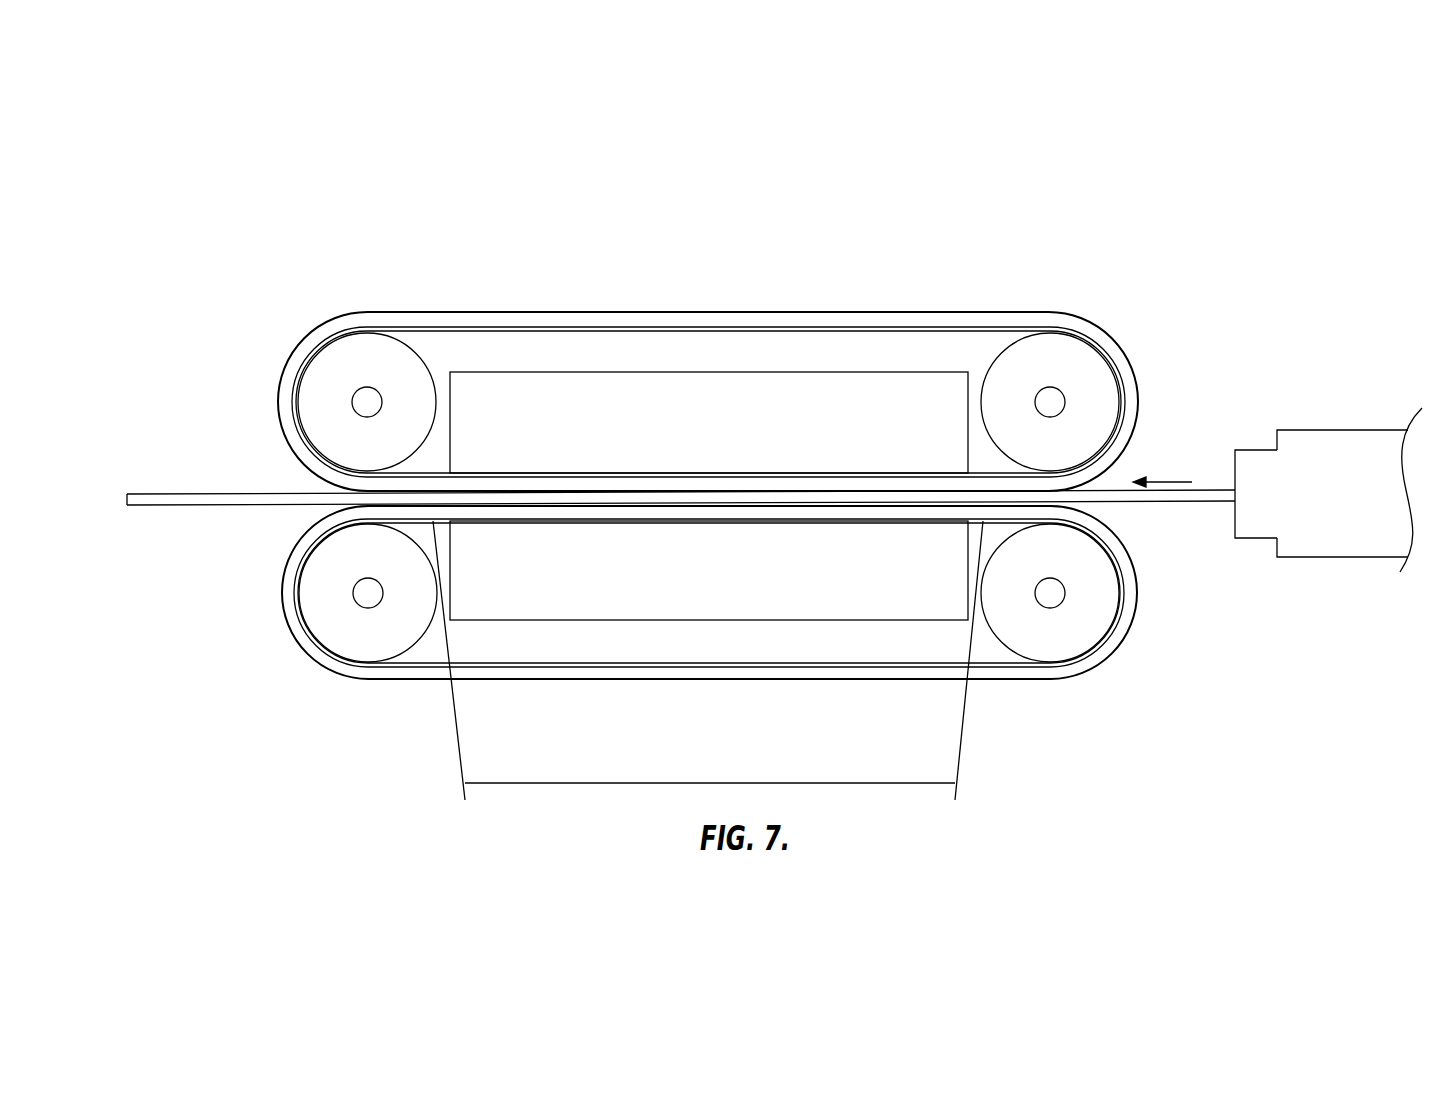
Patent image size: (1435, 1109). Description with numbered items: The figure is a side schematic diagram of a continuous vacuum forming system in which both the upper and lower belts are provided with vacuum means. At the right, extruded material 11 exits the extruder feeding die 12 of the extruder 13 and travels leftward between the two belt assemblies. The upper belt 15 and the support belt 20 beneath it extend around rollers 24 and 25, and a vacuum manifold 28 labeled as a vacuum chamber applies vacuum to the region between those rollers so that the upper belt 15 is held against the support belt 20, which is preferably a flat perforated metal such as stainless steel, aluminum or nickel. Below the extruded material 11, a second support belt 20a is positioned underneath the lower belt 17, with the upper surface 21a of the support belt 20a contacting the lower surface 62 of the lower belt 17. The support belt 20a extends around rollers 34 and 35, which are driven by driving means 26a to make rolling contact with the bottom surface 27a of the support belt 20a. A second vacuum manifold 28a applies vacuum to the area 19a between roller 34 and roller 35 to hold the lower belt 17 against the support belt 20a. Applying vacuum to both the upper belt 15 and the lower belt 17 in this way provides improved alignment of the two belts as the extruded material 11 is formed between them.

The extruded material 11 is at (1217, 487).
The extruder feeding die 12 is at (1255, 450).
The extruder 13 is at (1315, 432).
The upper belt 15 is at (880, 316).
The lower belt 17 is at (1075, 665).
The area 19a is at (708, 679).
The support belt 20 is at (311, 358).
The second support belt 20a is at (298, 583).
The upper surface 21a is at (308, 570).
The roller 24 is at (365, 345).
The roller 25 is at (1074, 348).
The driving means 26a is at (370, 600).
The bottom surface 27a is at (430, 667).
The vacuum manifold 28 is at (738, 386).
The vacuum manifold 28a is at (898, 607).
The roller 34 is at (352, 644).
The roller 35 is at (1045, 645).
The lower surface 62 is at (299, 623).